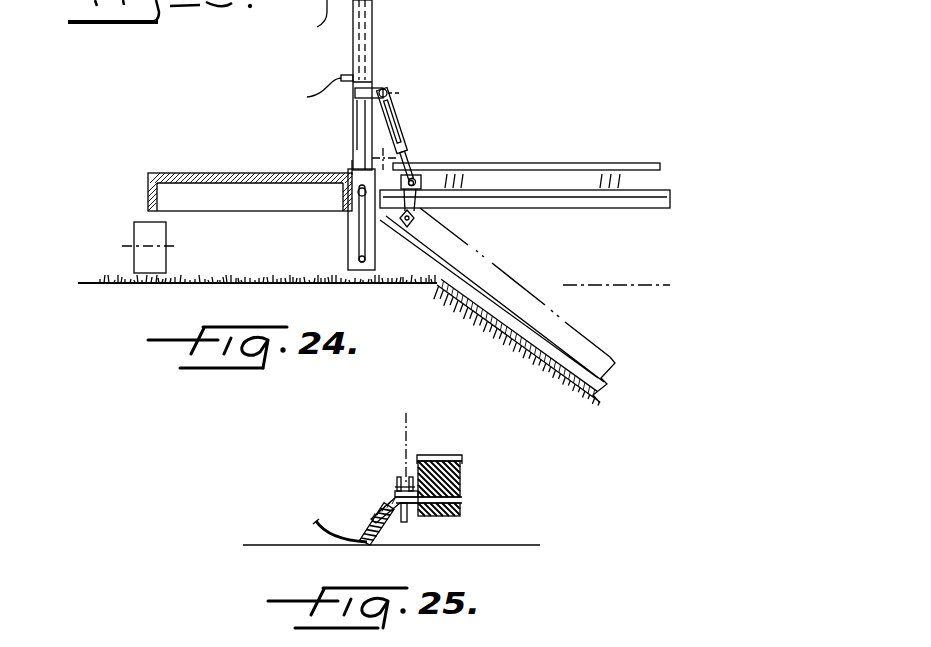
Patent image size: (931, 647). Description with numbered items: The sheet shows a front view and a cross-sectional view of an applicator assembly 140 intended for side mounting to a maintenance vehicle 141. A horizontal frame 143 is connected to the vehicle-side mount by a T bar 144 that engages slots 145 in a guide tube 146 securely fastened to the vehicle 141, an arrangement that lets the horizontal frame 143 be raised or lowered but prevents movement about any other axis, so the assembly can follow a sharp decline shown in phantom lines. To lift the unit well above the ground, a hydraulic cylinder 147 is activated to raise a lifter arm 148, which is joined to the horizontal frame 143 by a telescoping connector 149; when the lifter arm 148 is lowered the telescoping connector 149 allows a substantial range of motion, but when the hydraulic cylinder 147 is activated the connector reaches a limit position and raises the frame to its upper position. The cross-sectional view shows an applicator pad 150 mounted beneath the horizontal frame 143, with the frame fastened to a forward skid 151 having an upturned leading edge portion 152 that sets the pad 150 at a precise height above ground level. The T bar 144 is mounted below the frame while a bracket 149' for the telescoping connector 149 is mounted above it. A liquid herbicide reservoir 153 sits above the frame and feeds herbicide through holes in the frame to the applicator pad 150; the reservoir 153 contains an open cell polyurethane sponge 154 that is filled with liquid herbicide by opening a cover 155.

In FIG. 24, the applicator assembly 140 is at (658, 138).
In FIG. 25, the applicator assembly 140 is at (496, 490).
In FIG. 24, the maintenance vehicle 141 is at (178, 172).
In FIG. 24, the horizontal frame 143 is at (669, 194).
In FIG. 25, the horizontal frame 143 is at (464, 506).
In FIG. 24, the T bar 144 is at (351, 160).
In FIG. 25, the T bar 144 is at (408, 524).
In FIG. 24, the slots 145 is at (358, 242).
In FIG. 24, the guide tube 146 is at (356, 226).
In FIG. 24, the hydraulic cylinder 147 is at (373, 32).
In FIG. 24, the lifter arm 148 is at (384, 90).
In FIG. 24, the telescoping connector 149 is at (426, 137).
In FIG. 24, the bracket 149' is at (438, 173).
In FIG. 25, the bracket 149' is at (375, 465).
In FIG. 24, the applicator pad 150 is at (597, 208).
In FIG. 25, the applicator pad 150 is at (462, 514).
In FIG. 25, the forward skid 151 is at (345, 541).
In FIG. 25, the upturned leading edge portion 152 is at (313, 527).
In FIG. 24, the liquid herbicide reservoir 153 is at (658, 179).
In FIG. 25, the liquid herbicide reservoir 153 is at (462, 469).
In FIG. 25, the open cell polyurethane sponge 154 is at (457, 458).
In FIG. 24, the cover 155 is at (595, 142).
In FIG. 25, the cover 155 is at (426, 455).